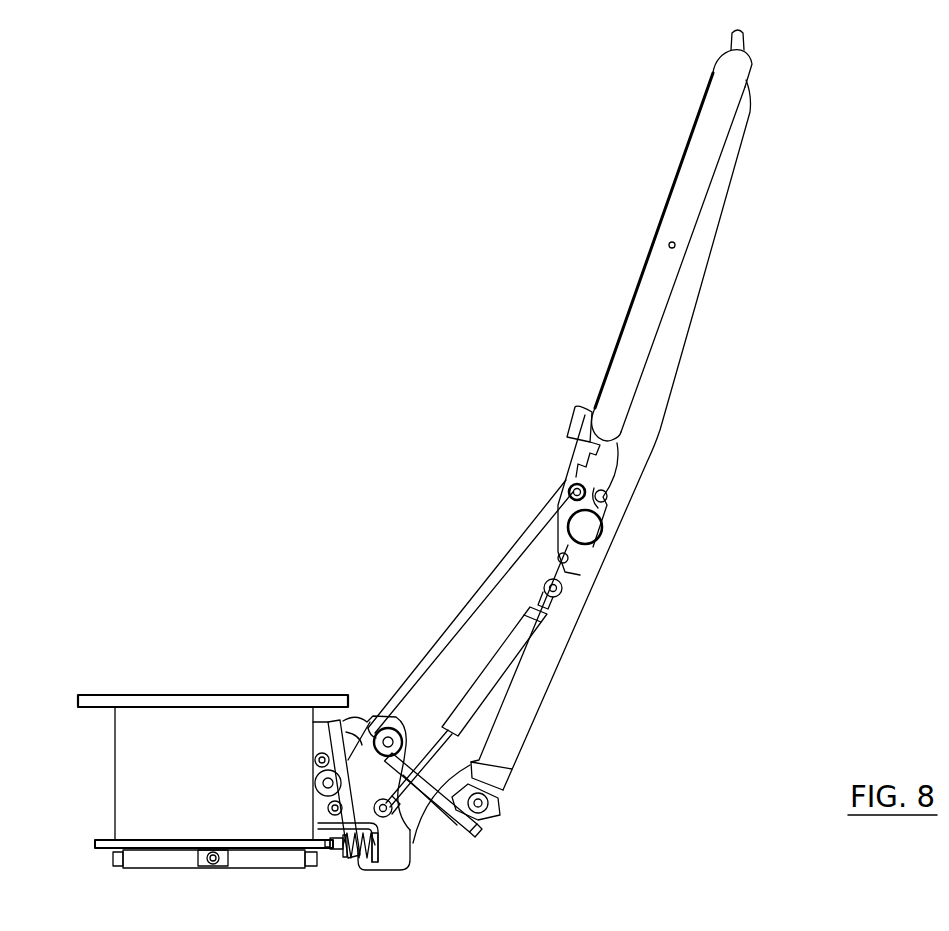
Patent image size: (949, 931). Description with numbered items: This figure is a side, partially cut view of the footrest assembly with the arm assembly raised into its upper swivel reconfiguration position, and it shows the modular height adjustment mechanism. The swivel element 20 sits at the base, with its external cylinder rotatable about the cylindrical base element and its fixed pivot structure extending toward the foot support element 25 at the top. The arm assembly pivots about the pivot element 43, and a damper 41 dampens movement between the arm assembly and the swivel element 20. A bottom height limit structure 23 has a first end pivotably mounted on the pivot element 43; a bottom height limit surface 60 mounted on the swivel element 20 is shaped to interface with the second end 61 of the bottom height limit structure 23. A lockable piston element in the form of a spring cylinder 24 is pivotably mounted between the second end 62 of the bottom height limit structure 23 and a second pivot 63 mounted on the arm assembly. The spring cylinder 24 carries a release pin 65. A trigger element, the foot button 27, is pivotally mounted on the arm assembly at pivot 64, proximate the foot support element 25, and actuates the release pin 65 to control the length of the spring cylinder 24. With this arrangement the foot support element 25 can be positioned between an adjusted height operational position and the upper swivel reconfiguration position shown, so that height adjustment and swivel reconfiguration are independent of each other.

The swivel element 20 is at (135, 790).
The bottom height limit structure 23 is at (470, 765).
The spring cylinder 24 is at (519, 693).
The foot support element 25 is at (733, 68).
The foot button 27 is at (580, 423).
The damper 41 is at (492, 675).
The pivot element 43 is at (388, 728).
The bottom height limit surface 60 is at (388, 845).
The second end of the bottom height limit structure 61 is at (466, 826).
The second end of the bottom height limit structure 62 is at (490, 808).
The second pivot 63 is at (588, 526).
The foot button pivot 64 is at (568, 486).
The release pin 65 is at (603, 493).